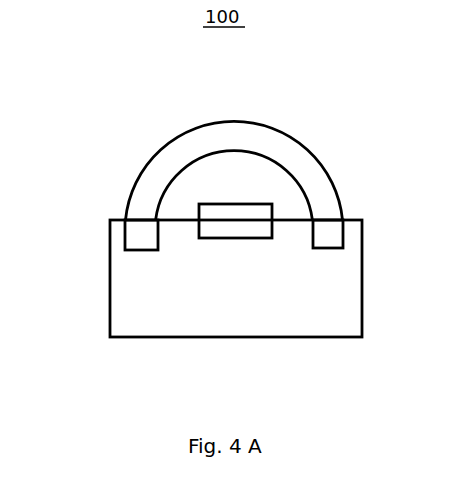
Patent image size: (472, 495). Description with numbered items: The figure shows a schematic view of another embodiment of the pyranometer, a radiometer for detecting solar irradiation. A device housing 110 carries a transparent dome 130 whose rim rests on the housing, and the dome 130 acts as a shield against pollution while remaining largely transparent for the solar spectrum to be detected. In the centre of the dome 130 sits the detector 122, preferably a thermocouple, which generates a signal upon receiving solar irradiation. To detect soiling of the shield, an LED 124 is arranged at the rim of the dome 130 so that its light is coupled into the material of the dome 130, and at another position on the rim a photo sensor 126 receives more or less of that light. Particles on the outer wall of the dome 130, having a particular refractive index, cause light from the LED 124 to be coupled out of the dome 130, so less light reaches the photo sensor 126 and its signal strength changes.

The device housing 110 is at (130, 337).
The detector 122 is at (225, 204).
The LED 124 is at (125, 235).
The photo sensor 126 is at (313, 248).
The dome 130 is at (192, 128).